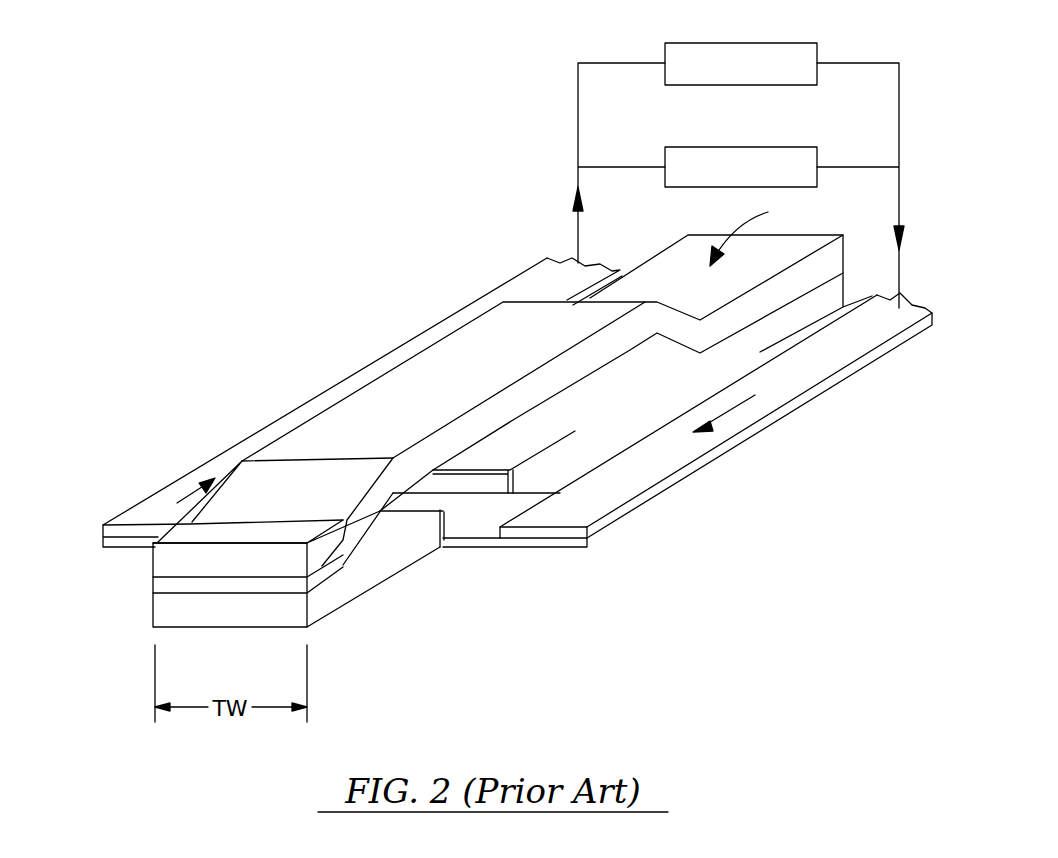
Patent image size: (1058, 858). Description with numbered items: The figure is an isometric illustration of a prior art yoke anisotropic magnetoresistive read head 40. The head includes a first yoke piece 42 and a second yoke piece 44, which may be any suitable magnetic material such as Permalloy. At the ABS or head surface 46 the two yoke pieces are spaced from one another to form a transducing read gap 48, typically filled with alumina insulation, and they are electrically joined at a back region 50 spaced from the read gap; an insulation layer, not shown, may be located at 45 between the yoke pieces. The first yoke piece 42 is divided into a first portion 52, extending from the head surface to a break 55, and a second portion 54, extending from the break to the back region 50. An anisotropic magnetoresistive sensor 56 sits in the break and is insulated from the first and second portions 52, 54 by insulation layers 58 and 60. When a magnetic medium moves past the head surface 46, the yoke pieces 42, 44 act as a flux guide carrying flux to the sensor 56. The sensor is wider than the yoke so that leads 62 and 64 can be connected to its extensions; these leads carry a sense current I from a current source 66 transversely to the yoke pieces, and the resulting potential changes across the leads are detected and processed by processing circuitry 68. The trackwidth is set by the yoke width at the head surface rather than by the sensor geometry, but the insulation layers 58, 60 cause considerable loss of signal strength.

The yoke anisotropic magnetoresistive head 40 is at (440, 220).
The first yoke piece 42 is at (396, 574).
The second yoke piece 44 is at (494, 417).
The insulation layer location 45 is at (576, 402).
The head surface 46 is at (183, 566).
The transducing read gap 48 is at (226, 590).
The back region 50 is at (731, 275).
The first portion 52 is at (345, 592).
The second portion 54 is at (620, 425).
The break 55 is at (411, 500).
The anisotropic magnetoresistive sensor 56 is at (467, 516).
The insulation layer 58 is at (438, 550).
The insulation layer 60 is at (455, 475).
The lead 62 is at (820, 357).
The lead 64 is at (200, 470).
The current source 66 is at (818, 43).
The processing circuitry 68 is at (817, 173).